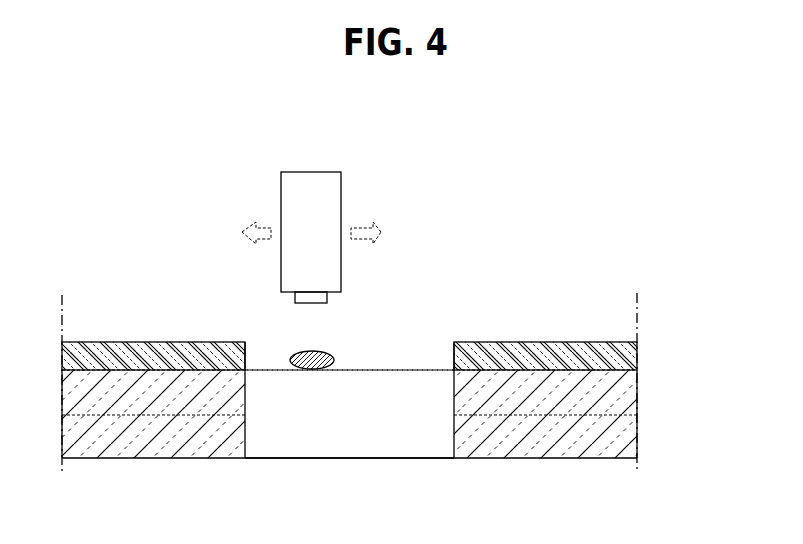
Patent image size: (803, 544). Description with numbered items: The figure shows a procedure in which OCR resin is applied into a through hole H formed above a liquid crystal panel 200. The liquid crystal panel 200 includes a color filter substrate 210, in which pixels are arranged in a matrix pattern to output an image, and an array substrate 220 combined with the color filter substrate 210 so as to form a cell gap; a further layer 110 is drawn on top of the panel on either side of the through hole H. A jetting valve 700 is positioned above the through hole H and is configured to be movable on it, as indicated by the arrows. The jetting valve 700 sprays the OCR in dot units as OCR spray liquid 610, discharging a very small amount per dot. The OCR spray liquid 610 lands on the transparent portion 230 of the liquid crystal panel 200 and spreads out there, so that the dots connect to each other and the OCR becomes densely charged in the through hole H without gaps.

The jetting valve 700 is at (342, 184).
The protective layer 110 is at (632, 352).
The liquid crystal panel 200 is at (401, 400).
The color filter substrate 210 is at (634, 397).
The array substrate 220 is at (634, 427).
The transparent portion 230 is at (365, 447).
The OCR spray liquid 610 is at (307, 369).
The through hole H is at (454, 348).